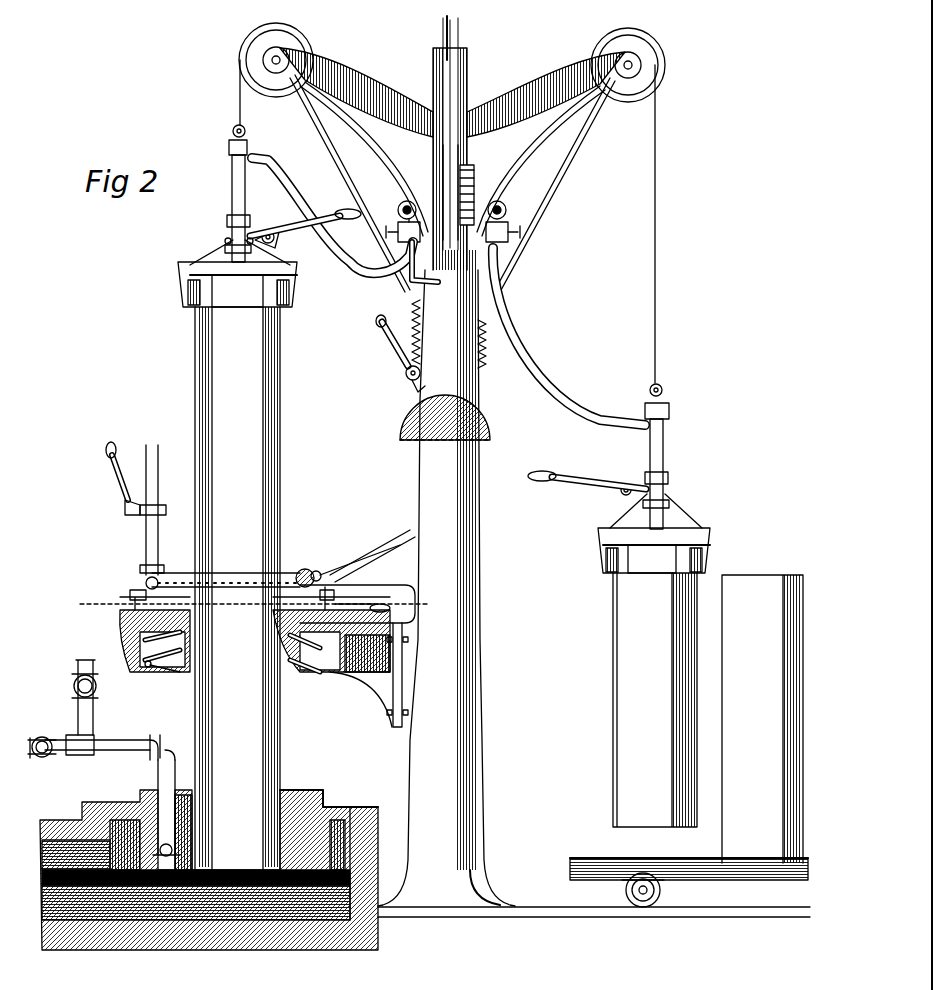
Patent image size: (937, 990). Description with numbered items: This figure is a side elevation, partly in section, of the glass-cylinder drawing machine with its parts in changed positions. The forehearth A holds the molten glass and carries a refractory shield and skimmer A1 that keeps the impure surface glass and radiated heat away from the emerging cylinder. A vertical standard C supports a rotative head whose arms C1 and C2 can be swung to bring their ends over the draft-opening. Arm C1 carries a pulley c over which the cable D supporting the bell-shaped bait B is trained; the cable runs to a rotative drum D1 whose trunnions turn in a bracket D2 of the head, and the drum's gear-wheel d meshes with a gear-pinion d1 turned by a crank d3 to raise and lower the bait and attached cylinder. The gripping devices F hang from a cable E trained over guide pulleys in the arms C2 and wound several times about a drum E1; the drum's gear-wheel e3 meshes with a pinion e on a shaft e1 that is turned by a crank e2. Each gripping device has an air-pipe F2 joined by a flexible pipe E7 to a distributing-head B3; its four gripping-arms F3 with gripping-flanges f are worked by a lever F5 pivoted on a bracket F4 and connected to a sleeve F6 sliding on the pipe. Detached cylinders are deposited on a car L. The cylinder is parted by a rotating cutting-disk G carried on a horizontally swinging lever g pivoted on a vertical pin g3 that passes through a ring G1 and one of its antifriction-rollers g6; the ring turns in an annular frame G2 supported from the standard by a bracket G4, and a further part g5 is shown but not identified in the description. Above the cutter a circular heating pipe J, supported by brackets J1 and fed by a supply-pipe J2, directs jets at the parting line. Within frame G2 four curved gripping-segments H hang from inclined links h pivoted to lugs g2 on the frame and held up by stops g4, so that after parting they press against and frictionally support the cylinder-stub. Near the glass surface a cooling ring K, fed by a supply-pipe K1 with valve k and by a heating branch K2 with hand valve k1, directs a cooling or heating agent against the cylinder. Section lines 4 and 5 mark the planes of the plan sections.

The pulley c is at (450, 30).
The cable D is at (460, 45).
The arm C1 is at (239, 62).
The arms C2 is at (372, 80).
The cable E is at (352, 176).
The bracket D2 is at (462, 145).
The rotative drum D1 is at (478, 185).
The gear-wheel d is at (498, 200).
The gear-pinion d1 is at (500, 255).
The crank d3 is at (429, 262).
The distributing-head B3 is at (405, 200).
The flexible pipes E7 is at (300, 185).
The drum E1 is at (489, 344).
The gear-wheel e3 is at (410, 323).
The crank e2 is at (388, 340).
The gear-pinion e is at (405, 373).
The shaft e1 is at (408, 386).
The bell-shaped bait B is at (486, 440).
The vertical standard C is at (478, 540).
The gripping devices F is at (297, 244).
The air-pipe F2 is at (232, 180).
The gripping-arms F3 is at (222, 232).
The bracket F4 is at (262, 232).
The lever F5 is at (348, 220).
The sleeve F6 is at (227, 218).
The gripping-flanges f is at (183, 290).
The cooling pipe K is at (182, 846).
The car L is at (582, 858).
The circular heating pipe J is at (145, 548).
The brackets J1 is at (392, 586).
The supply-pipe J2 is at (148, 448).
The section line 5 is at (146, 562).
The section line 4 is at (488, 612).
The rotating cutting-disk G is at (305, 568).
The horizontally-swinging lever g is at (360, 555).
The vertical pivot-pin g3 is at (395, 535).
The ring G1 is at (147, 599).
The horizontal antifriction-rollers g6 is at (122, 620).
The annular frame G2 is at (130, 650).
The curved gripping-segments H is at (185, 632).
The lugs g2 is at (150, 688).
The links h is at (154, 679).
The stops g4 is at (137, 700).
The link g5 is at (331, 641).
The bracket G4 is at (372, 688).
The branch pipe K2 is at (75, 664).
The hand-actuated valve k1 is at (72, 684).
The supply-pipe K1 is at (142, 738).
The valve k is at (44, 758).
The forehearth A is at (95, 800).
The refractory shield and skimmer A1 is at (322, 796).